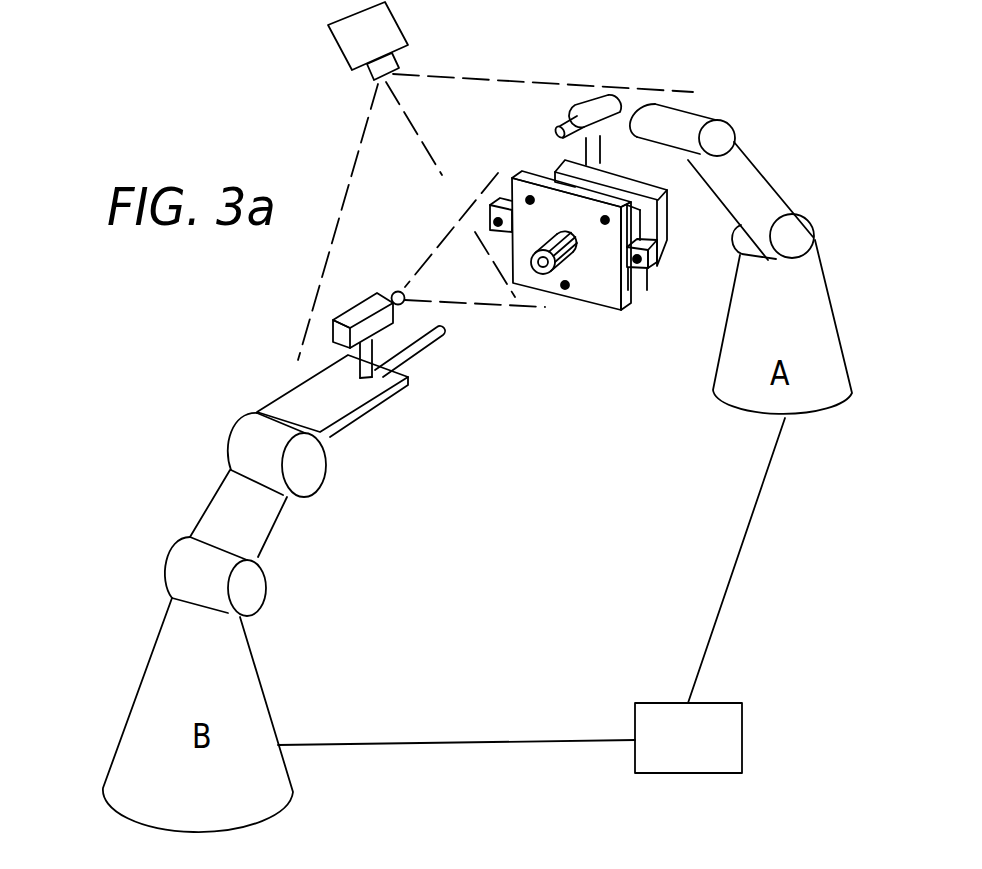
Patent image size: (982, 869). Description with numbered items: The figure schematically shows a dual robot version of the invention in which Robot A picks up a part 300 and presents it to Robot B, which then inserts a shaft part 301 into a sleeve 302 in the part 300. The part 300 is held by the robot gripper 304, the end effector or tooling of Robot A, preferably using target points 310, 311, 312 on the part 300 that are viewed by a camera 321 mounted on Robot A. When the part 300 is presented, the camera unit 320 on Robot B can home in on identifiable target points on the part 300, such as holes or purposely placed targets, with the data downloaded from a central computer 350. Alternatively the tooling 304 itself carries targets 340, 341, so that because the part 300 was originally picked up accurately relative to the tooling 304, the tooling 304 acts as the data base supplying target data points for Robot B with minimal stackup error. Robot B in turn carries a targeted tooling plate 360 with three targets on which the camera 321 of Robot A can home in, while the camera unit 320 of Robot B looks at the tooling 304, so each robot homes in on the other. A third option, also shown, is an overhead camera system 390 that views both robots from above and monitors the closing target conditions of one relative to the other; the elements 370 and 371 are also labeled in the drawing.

The part 300 is at (603, 307).
The shaft part 301 is at (440, 352).
The sleeve 302 is at (519, 281).
The robot gripper 304 is at (660, 250).
The target point 310 is at (528, 198).
The target point 311 is at (603, 218).
The target point 312 is at (567, 286).
The camera unit 320 is at (347, 311).
The camera 321 is at (594, 102).
The target 340 is at (495, 222).
The target 341 is at (647, 268).
The central computer 350 is at (718, 750).
The tooling plate 360 is at (395, 403).
The lower camera 370 is at (660, 868).
The lower target 371 is at (530, 868).
The overhead camera system 390 is at (342, 32).